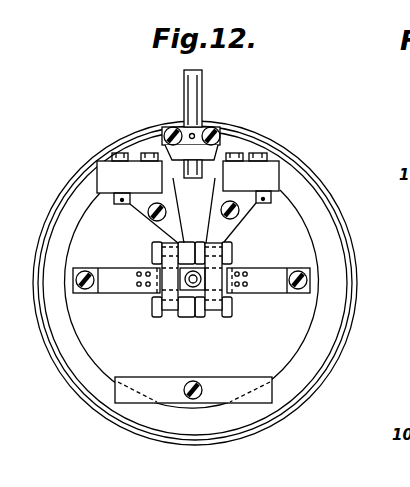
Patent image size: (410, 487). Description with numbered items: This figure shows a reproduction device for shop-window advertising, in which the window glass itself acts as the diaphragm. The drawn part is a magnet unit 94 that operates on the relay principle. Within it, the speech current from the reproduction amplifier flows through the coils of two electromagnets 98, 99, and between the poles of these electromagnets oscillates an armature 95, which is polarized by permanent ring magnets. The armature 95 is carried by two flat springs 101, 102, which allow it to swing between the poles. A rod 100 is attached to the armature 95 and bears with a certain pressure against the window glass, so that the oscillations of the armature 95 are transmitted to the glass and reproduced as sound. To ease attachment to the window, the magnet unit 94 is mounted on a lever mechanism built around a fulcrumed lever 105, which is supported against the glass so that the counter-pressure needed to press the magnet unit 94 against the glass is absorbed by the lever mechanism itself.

The magnet unit 94 is at (247, 141).
The armature 95 is at (230, 283).
The electromagnet 98 is at (160, 296).
The electromagnet 99 is at (311, 206).
The rod 100 is at (188, 285).
The flat spring 101 is at (113, 275).
The flat spring 102 is at (333, 226).
The fulcrumed lever 105 is at (203, 85).